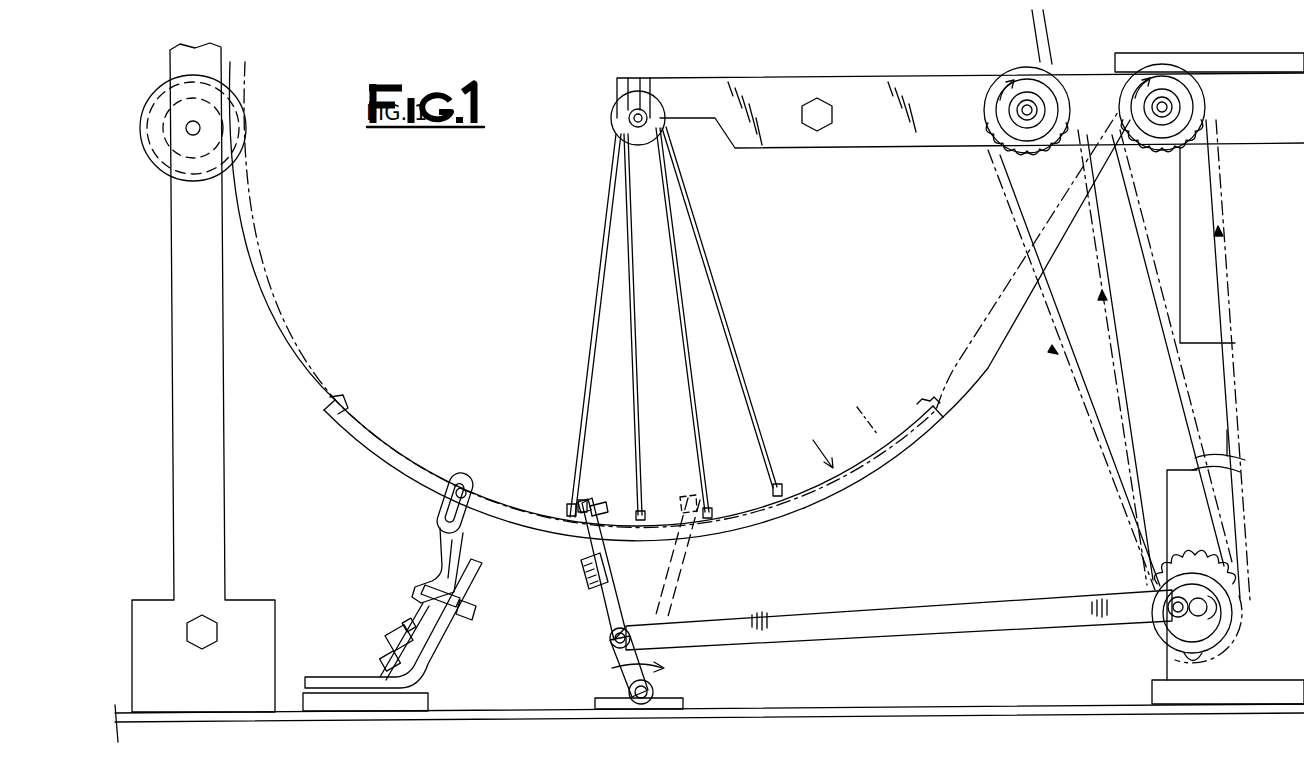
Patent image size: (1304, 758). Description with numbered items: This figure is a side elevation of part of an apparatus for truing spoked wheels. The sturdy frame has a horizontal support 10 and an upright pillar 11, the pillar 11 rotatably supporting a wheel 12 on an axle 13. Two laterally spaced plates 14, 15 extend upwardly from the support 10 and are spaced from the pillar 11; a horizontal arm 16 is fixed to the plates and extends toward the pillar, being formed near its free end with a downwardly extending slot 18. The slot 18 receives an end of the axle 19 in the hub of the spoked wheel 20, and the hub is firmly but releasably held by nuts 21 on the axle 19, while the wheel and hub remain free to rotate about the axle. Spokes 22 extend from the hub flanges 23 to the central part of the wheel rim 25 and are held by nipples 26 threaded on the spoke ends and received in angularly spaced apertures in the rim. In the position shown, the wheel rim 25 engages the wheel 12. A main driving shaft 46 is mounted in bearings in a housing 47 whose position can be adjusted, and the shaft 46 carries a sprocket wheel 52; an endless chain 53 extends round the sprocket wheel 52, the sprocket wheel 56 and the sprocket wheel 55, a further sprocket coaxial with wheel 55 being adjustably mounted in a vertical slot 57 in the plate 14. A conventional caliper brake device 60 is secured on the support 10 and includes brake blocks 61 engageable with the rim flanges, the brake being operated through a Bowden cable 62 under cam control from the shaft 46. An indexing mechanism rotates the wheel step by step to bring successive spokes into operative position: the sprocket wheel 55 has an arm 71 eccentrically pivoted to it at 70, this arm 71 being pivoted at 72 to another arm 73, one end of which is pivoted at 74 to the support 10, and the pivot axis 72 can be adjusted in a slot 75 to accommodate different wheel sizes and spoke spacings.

The horizontal support 10 is at (835, 703).
The upright pillar 11 is at (172, 466).
The wheel 12 is at (150, 150).
The axle 13 is at (188, 122).
The plate 14 is at (1210, 285).
The plate 15 is at (1205, 474).
The horizontal arm 16 is at (865, 145).
The slot 18 is at (648, 92).
The axle 19 is at (620, 114).
The wheel 20 is at (878, 468).
The nut 21 is at (647, 147).
The spoke 22 is at (745, 377).
The flange 23 is at (613, 132).
The wheel rim 25 is at (800, 520).
The nipple 26 is at (645, 513).
The main driving shaft 46 is at (1172, 116).
The housing 47 is at (1220, 64).
The sprocket wheel 52 is at (1163, 150).
The endless chain 53 is at (1086, 445).
The sprocket wheel 55 is at (1213, 583).
The sprocket wheel 56 is at (1007, 153).
The vertical slot 57 is at (1193, 549).
The caliper brake device 60 is at (478, 545).
The brake block 61 is at (484, 492).
The Bowden cable 62 is at (382, 678).
The pivot 70 is at (1173, 617).
The arm 71 is at (922, 606).
The pivot 72 is at (624, 624).
The arm 73 is at (594, 614).
The pivot 74 is at (656, 690).
The slot 75 is at (608, 632).